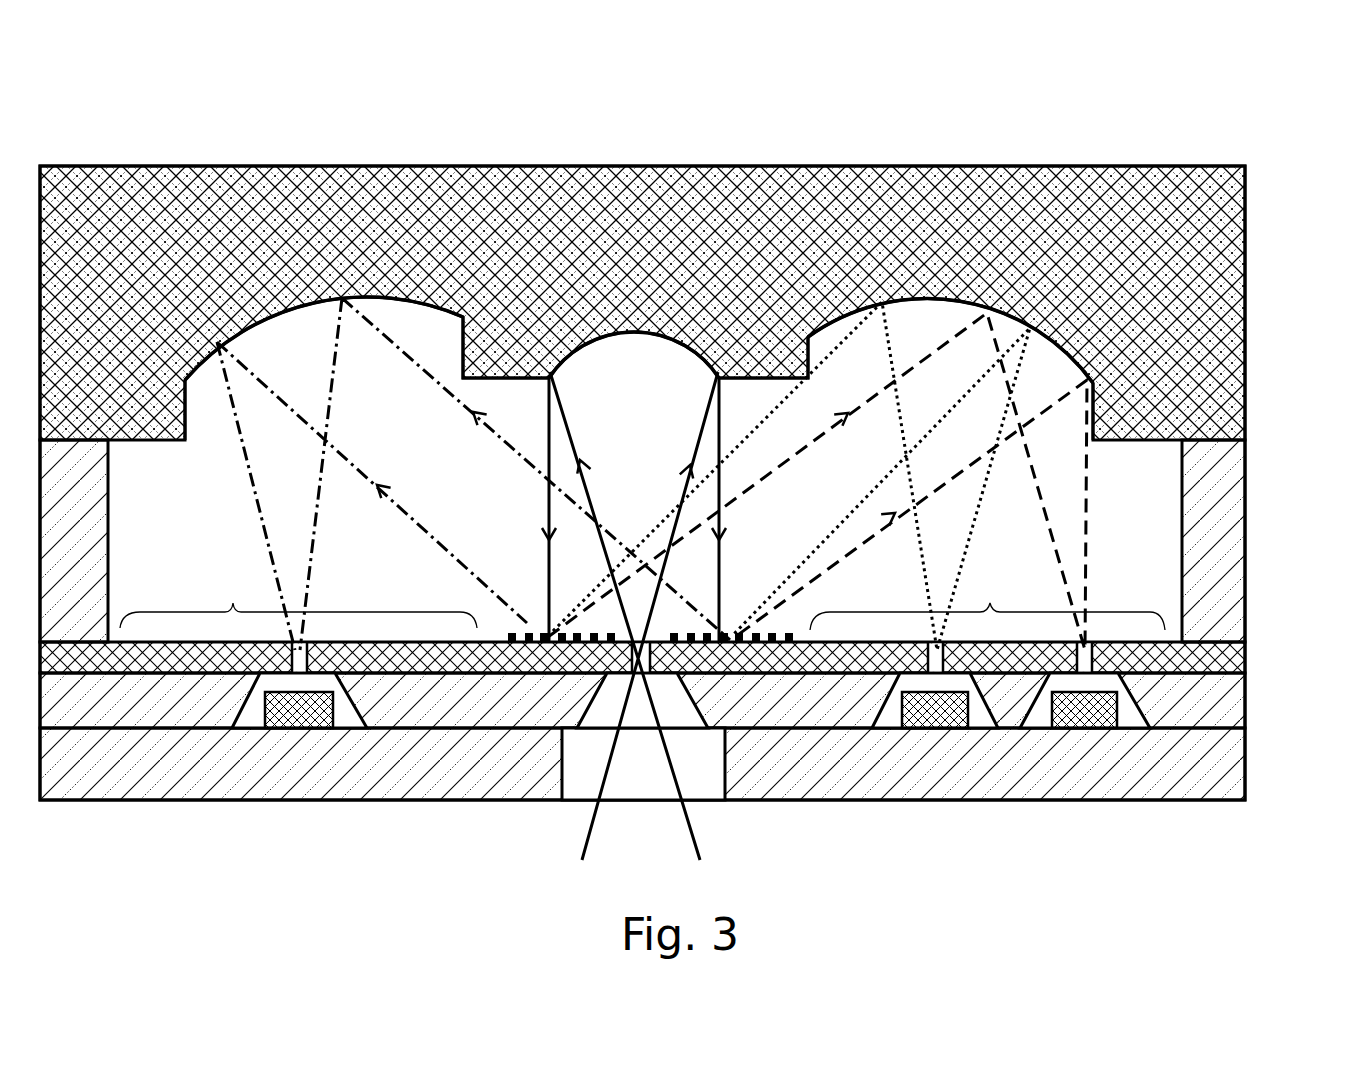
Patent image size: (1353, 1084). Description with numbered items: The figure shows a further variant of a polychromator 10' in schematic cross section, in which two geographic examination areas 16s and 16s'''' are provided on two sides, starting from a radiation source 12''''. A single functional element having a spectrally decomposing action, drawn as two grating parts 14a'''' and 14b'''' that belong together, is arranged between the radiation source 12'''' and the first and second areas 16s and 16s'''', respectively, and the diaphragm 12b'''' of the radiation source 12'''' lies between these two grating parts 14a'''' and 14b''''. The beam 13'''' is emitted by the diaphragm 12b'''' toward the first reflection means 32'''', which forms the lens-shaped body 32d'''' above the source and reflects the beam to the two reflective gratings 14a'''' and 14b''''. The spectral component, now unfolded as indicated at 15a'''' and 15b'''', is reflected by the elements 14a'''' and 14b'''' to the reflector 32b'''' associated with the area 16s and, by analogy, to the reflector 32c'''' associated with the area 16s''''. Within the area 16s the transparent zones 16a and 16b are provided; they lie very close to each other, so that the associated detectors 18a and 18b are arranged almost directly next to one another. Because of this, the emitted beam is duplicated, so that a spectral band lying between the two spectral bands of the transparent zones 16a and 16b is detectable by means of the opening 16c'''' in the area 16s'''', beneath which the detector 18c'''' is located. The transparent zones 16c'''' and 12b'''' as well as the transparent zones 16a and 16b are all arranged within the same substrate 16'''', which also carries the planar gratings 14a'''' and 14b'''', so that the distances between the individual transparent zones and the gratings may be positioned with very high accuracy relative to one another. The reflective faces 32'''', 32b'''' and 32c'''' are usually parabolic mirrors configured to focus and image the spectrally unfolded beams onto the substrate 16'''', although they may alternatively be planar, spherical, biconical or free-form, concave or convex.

The polychromator 10' is at (696, 422).
The reflection means 32'''' is at (642, 266).
The reflector 32c'''' is at (328, 236).
The unfolded spectral component 15b'''' is at (381, 266).
The central lens surface 32d'''' is at (635, 235).
The beam 13'''' is at (675, 367).
The reflector 32b'''' is at (950, 237).
The unfolded spectral component 15a'''' is at (955, 266).
The substrate 16'''' is at (696, 659).
The second examination area 16s'''' is at (298, 599).
The first examination area 16s is at (987, 600).
The opening 16c'''' is at (230, 759).
The detector 18c'''' is at (301, 775).
The functional element having a spectrally decomposing action 14b'''' is at (506, 755).
The radiation source 12'''' is at (643, 775).
The diaphragm 12b'''' is at (673, 624).
The functional element having a spectrally decomposing action 14a'''' is at (791, 755).
The detector 18a is at (935, 720).
The transparent zone 16a is at (940, 657).
The detector 18b is at (1085, 720).
The transparent zone 16b is at (1090, 660).